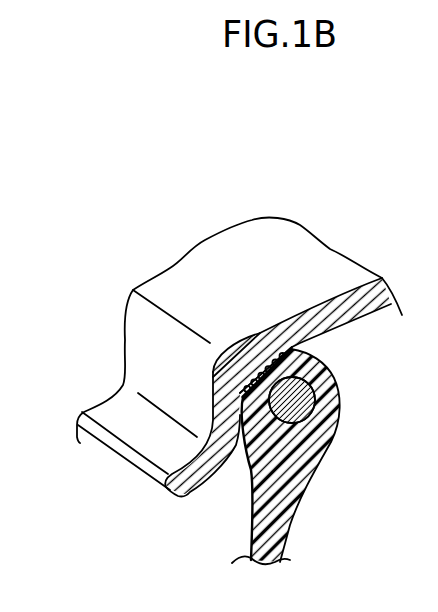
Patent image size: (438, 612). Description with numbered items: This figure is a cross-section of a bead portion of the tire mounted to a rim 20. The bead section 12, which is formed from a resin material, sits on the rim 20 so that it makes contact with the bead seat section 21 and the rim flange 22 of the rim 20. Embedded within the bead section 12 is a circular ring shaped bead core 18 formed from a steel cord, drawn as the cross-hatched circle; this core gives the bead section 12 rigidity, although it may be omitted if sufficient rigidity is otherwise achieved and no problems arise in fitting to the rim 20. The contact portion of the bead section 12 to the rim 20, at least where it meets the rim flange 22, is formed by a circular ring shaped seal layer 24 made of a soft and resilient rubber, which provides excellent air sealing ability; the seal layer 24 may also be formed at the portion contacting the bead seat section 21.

The bead section 12 is at (327, 455).
The bead core 18 is at (313, 403).
The rim 20 is at (229, 330).
The bead seat section 21 is at (289, 347).
The rim flange 22 is at (160, 390).
The seal layer 24 is at (213, 377).